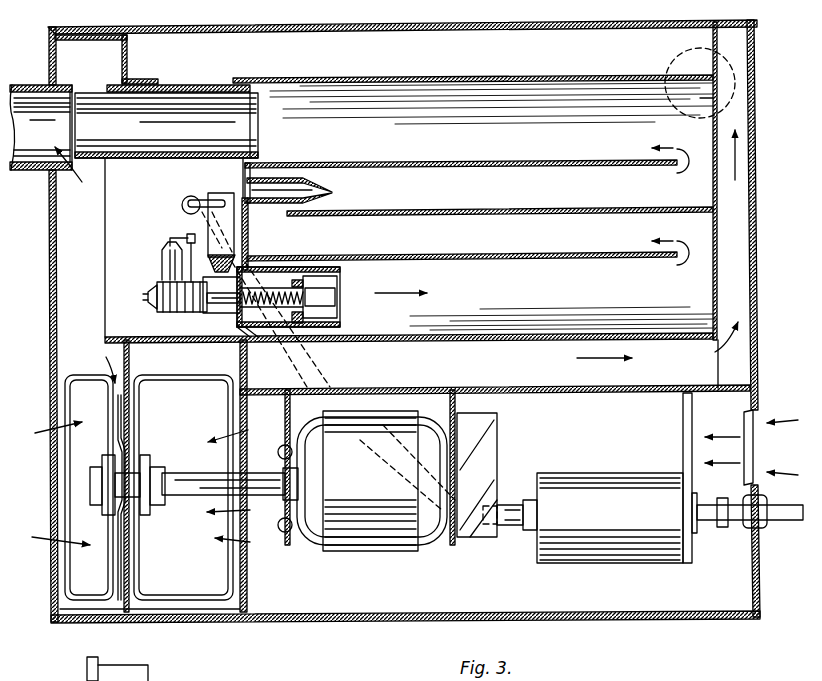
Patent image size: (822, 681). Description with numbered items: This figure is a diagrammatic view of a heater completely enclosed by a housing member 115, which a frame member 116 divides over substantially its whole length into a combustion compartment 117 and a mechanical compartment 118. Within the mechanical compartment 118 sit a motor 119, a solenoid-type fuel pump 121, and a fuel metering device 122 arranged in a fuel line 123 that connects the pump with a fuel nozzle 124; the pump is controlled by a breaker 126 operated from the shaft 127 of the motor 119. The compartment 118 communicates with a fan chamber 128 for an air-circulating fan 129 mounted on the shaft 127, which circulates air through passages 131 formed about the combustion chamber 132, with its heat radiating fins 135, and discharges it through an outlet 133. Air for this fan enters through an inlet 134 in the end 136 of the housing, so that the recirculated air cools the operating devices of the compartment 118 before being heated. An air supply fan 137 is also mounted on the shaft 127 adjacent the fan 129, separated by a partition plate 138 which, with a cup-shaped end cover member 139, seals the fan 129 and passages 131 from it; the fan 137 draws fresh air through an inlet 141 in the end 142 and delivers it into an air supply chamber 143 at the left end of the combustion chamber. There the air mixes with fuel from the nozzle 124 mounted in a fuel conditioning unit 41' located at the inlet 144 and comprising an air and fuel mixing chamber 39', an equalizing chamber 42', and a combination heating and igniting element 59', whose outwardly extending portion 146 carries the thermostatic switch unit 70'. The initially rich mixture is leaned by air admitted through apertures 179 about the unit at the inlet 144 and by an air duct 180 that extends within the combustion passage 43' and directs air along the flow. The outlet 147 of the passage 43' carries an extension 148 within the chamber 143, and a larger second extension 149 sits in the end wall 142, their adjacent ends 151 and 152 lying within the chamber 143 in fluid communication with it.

The second extension 149 is at (23, 85).
The adjacent end of extension member 149 152 is at (68, 87).
The adjacent end of extension member 148 151 is at (74, 96).
The extension 148 is at (173, 96).
The outlet 147 is at (270, 78).
The combustion compartment 117 is at (491, 86).
The heat radiating fins 135 is at (707, 35).
The air duct 180 is at (307, 183).
The combustion passage 43' is at (467, 160).
The outlet 133 is at (676, 100).
The housing member 115 is at (753, 185).
The fuel nozzle 124 is at (218, 192).
The air supply chamber 143 is at (176, 220).
The combustion chamber 132 is at (480, 220).
The apertures 179 is at (283, 243).
The inlet 144 is at (287, 262).
The combination heating and igniting element 59' is at (311, 265).
The thermostatic switch unit 70' is at (162, 273).
The fuel conditioning unit 41' is at (359, 294).
The portion of element 59' 146 is at (152, 310).
The equalizing chamber 42' is at (526, 317).
The cup-shaped end cover member 139 is at (113, 336).
The end wall 142 is at (50, 353).
The fan chamber 128 is at (178, 473).
The air and fuel mixing chamber 39' is at (230, 323).
The fuel line 123 is at (363, 387).
The passages 131 is at (540, 359).
The frame member 116 is at (508, 387).
The partition plate 138 is at (131, 447).
The mechanical compartment 118 is at (578, 431).
The inlet 134 is at (753, 448).
The inlet 141 is at (58, 513).
The fuel metering device 122 is at (397, 493).
The shaft 127 is at (268, 492).
The motor 119 is at (373, 548).
The breaker 126 is at (478, 540).
The fuel pump 121 is at (612, 560).
The end of housing member 136 is at (756, 578).
The air supply fan 137 is at (78, 593).
The air-circulating fan 129 is at (217, 583).